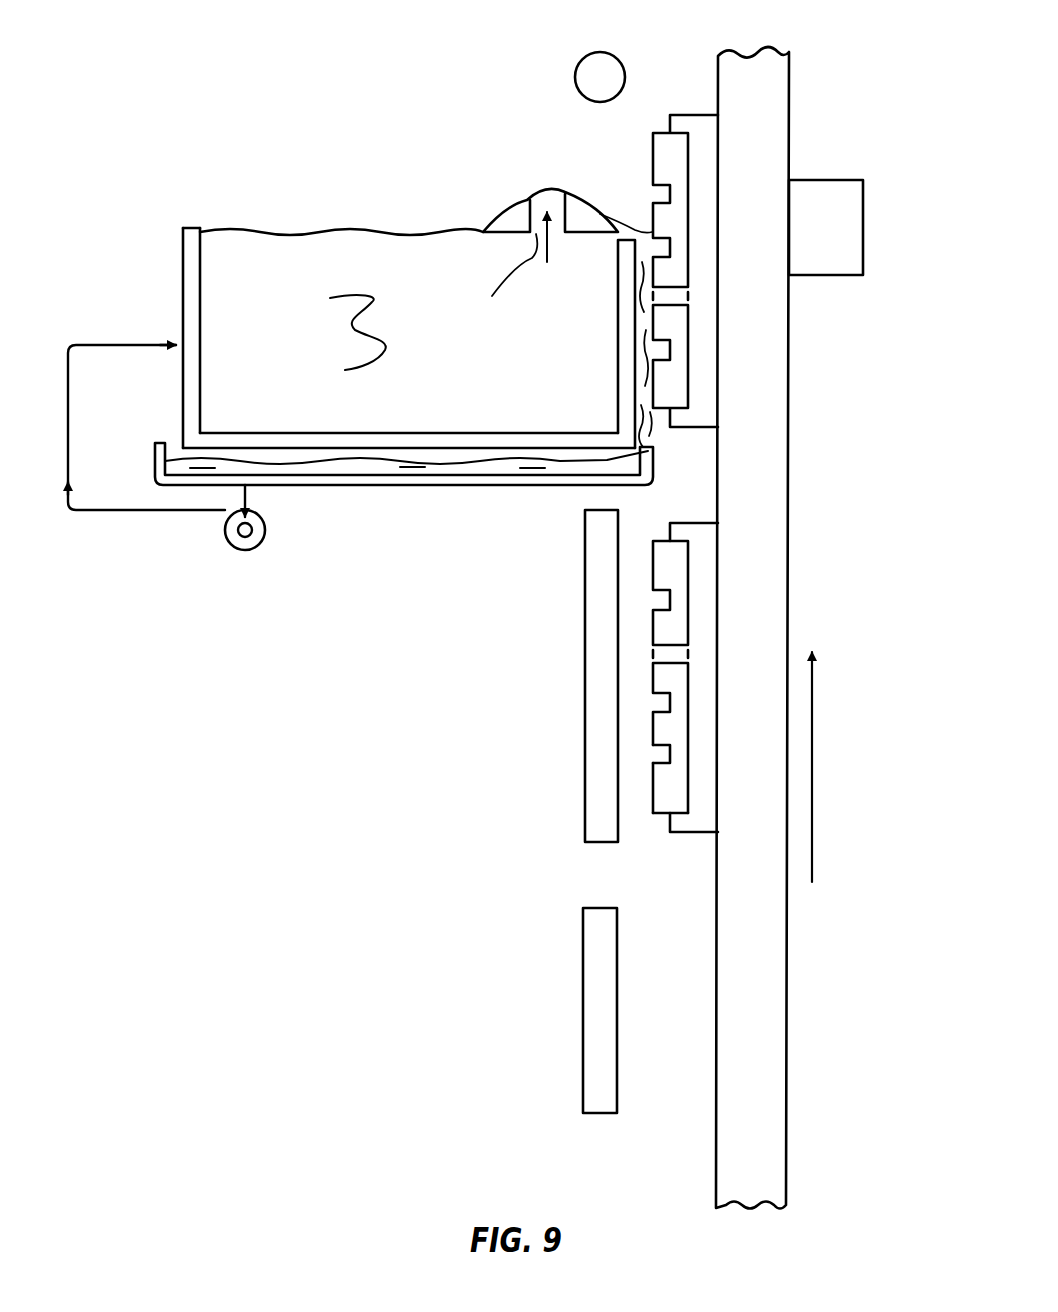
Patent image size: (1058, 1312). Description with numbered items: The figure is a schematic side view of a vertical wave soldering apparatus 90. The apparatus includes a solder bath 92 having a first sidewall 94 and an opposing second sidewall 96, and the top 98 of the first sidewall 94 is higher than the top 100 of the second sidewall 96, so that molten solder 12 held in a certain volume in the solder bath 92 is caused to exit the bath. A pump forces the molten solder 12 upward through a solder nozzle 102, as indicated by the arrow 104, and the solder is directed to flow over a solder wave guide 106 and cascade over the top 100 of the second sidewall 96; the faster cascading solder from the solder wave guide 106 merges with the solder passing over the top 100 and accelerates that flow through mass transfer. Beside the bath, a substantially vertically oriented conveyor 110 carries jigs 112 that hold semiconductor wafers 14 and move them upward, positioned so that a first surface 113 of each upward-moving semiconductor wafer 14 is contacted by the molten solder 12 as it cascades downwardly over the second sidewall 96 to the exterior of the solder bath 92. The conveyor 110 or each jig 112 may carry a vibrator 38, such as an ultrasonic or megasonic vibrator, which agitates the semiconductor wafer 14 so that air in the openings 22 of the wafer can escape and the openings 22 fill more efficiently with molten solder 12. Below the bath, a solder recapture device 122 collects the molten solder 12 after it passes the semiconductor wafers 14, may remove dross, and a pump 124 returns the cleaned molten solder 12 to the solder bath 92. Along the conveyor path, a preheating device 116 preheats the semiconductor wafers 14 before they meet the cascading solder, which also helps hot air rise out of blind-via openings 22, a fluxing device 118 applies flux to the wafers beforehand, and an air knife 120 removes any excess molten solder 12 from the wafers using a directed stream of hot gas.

The vertical wave soldering apparatus 90 is at (316, 90).
The solder bath 92 is at (192, 398).
The first sidewall 94 is at (183, 264).
The second sidewall 96 is at (642, 282).
The top of first sidewall 98 is at (195, 222).
The top of second sidewall 100 is at (628, 233).
The solder nozzle 102 is at (499, 280).
The arrow 104 is at (545, 240).
The solder wave guide 106 is at (578, 215).
The conveyor 110 is at (776, 458).
The jig 112 is at (700, 132).
The first surface 113 is at (651, 554).
The preheating device 116 is at (598, 678).
The fluxing device 118 is at (598, 1020).
The air knife 120 is at (592, 68).
The solder recapture device 122 is at (547, 482).
The pump 124 is at (265, 530).
The molten solder 12 is at (267, 393).
The semiconductor wafer 14 is at (657, 803).
The opening 22 is at (650, 752).
The vibrator 38 is at (850, 238).